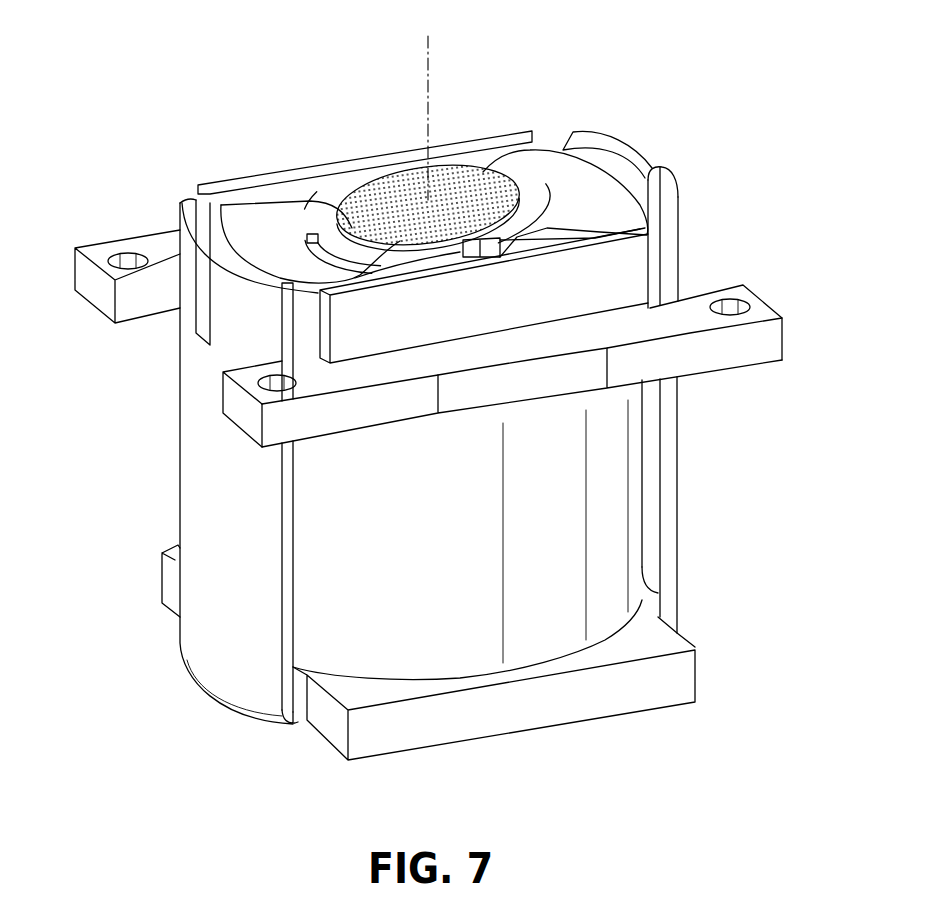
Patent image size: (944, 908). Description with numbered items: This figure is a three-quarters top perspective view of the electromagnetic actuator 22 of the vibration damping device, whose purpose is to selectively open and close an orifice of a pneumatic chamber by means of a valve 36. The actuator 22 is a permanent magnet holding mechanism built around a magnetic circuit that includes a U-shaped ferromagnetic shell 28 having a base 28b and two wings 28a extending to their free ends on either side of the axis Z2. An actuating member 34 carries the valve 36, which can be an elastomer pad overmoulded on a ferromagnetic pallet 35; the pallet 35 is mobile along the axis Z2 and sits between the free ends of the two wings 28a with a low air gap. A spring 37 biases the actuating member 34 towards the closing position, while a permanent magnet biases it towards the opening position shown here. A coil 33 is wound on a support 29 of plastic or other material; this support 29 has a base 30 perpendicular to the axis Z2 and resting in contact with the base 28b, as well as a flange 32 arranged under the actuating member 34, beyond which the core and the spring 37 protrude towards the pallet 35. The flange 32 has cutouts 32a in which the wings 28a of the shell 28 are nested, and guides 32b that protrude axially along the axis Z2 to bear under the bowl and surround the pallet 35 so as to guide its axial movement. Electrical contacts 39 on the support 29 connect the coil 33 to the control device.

The actuator 22 is at (712, 164).
The ferromagnetic shell 28 is at (206, 469).
The wings 28a is at (213, 505).
The base 28b is at (308, 727).
The support 29 is at (693, 624).
The base 30 is at (663, 645).
The flange 32 is at (618, 330).
The cutouts 32a is at (703, 290).
The guides 32b is at (353, 280).
The coil 33 is at (610, 518).
The actuating member 34 is at (592, 152).
The pallet 35 is at (592, 197).
The valve 36 is at (383, 197).
The spring 37 is at (474, 255).
The electrical contacts 39 is at (170, 541).
The axis Z2 is at (425, 57).